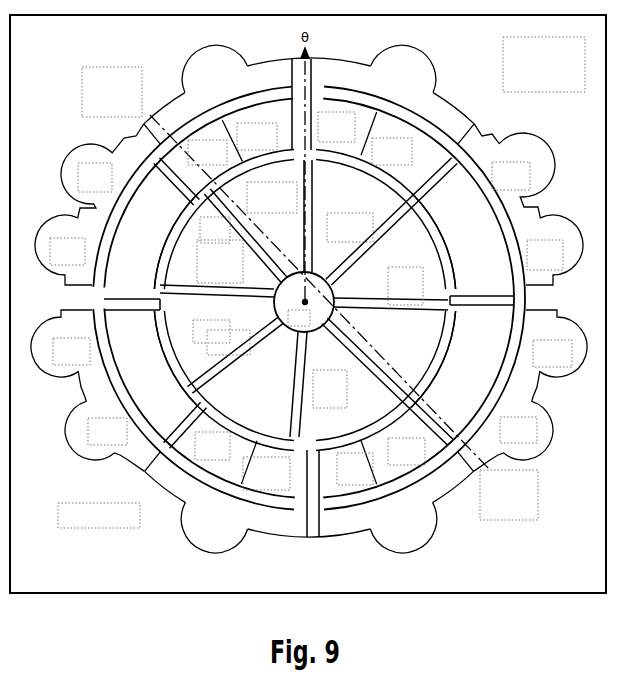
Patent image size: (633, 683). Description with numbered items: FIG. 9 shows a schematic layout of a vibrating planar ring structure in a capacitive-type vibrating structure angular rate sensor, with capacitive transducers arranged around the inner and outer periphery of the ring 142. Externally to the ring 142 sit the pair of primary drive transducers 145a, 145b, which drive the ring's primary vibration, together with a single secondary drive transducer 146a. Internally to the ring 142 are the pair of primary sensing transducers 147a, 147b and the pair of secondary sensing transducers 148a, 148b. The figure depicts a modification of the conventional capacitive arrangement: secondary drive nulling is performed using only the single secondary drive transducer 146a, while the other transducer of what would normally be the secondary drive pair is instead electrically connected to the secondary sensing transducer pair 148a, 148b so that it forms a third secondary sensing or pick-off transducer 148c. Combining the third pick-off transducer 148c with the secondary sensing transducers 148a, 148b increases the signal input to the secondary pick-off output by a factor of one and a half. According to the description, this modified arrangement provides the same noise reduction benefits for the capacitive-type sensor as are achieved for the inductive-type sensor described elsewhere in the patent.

The ring 142 is at (140, 463).
The primary drive transducer 145a is at (214, 68).
The primary drive transducer 145b is at (403, 528).
The secondary drive transducer 146a is at (401, 68).
The primary sensing transducer 147a is at (453, 241).
The primary sensing transducer 147b is at (162, 359).
The secondary sensing transducer 148a is at (454, 359).
The secondary sensing transducer 148b is at (155, 241).
The third secondary sensing or pick-off transducer 148c is at (214, 528).